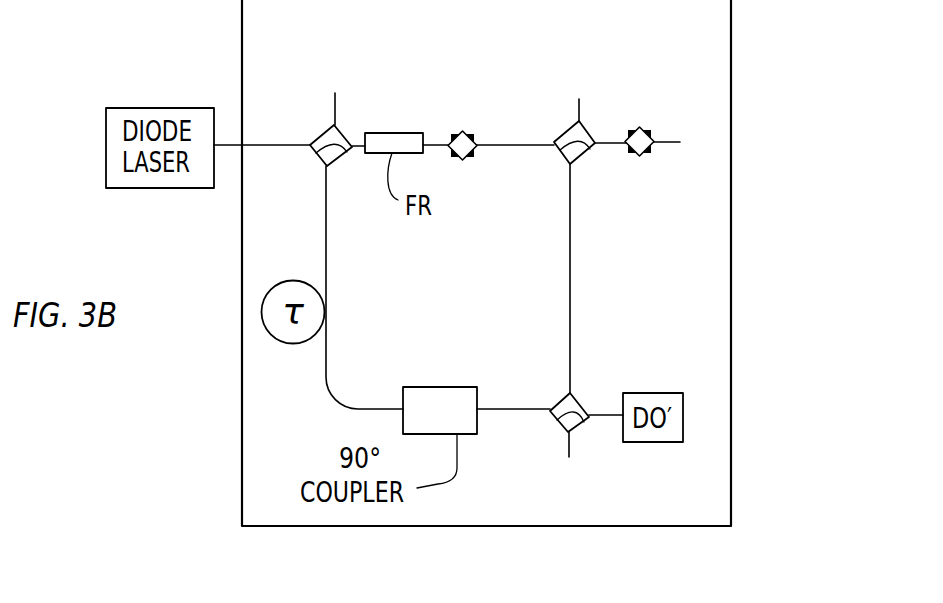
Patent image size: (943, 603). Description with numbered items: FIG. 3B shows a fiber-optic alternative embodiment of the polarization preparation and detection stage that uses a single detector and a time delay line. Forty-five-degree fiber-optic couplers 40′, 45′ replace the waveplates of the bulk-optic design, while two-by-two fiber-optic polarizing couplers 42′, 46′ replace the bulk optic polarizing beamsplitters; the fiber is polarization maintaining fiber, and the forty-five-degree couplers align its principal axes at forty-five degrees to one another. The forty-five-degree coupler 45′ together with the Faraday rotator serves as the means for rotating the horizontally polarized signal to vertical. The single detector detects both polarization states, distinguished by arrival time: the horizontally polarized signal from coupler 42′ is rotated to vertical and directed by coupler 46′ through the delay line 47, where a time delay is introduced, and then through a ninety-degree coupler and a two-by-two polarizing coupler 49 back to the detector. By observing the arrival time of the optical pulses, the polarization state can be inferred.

The forty-five-degree fiber-optic coupler 40′ is at (650, 132).
The 2×2 fiber-optic polarizing coupler 42′ is at (585, 157).
The forty-five-degree fiber-optic coupler 45′ is at (462, 157).
The 2×2 fiber-optic polarizing coupler 46′ is at (322, 162).
The delay line 47 is at (326, 363).
The 2×2 polarizing coupler 49 is at (586, 407).